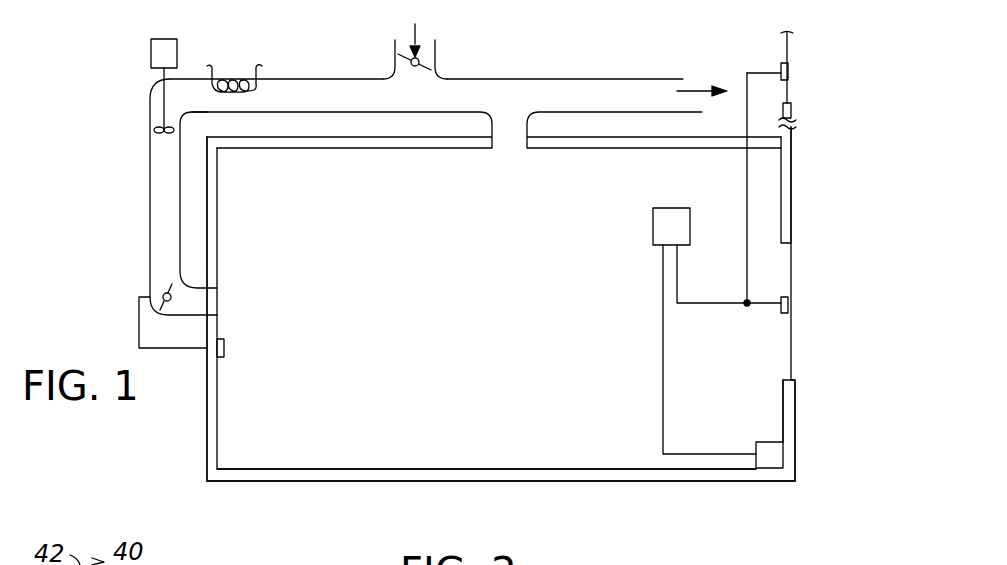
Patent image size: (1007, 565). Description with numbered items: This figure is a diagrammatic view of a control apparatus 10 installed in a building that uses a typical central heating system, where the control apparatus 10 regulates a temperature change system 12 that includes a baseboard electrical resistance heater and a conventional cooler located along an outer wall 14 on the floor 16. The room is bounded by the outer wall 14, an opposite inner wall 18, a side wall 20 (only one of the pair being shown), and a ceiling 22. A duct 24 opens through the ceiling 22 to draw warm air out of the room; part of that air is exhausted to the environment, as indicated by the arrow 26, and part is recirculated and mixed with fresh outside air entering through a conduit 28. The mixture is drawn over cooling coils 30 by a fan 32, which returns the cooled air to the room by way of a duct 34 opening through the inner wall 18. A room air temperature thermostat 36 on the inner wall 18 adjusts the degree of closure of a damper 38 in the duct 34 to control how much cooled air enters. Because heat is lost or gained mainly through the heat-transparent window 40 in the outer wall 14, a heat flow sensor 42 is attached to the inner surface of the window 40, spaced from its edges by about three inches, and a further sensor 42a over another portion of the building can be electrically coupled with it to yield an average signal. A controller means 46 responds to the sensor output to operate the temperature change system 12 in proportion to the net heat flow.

The control apparatus 10 is at (646, 228).
The temperature change system 12 is at (770, 442).
The outer wall 14 is at (783, 178).
The floor 16 is at (474, 468).
The inner wall 18 is at (214, 195).
The side wall 20 is at (440, 311).
The ceiling 22 is at (353, 150).
The duct 24 is at (527, 130).
The arrow 26 is at (688, 90).
The conduit 28 is at (397, 62).
The cooling coils 30 is at (257, 88).
The fan 32 is at (154, 134).
The duct 34 is at (150, 245).
The room air temperature thermostat 36 is at (224, 347).
The damper 38 is at (163, 288).
The window 40 is at (793, 268).
The heat flow sensor 42 is at (778, 308).
The heat sensor 42a is at (772, 88).
The controller means 46 is at (679, 208).